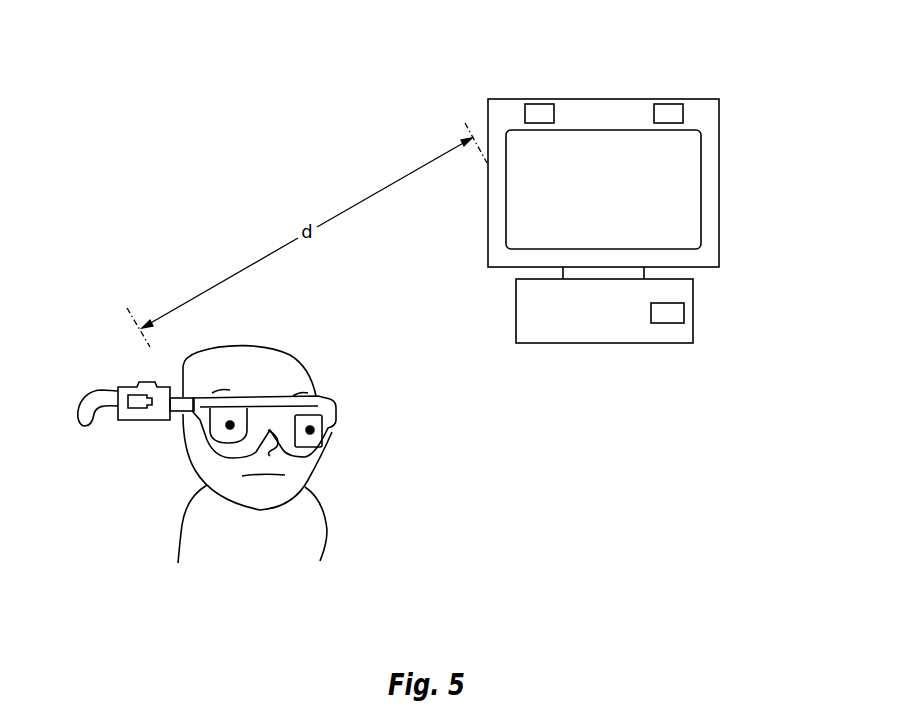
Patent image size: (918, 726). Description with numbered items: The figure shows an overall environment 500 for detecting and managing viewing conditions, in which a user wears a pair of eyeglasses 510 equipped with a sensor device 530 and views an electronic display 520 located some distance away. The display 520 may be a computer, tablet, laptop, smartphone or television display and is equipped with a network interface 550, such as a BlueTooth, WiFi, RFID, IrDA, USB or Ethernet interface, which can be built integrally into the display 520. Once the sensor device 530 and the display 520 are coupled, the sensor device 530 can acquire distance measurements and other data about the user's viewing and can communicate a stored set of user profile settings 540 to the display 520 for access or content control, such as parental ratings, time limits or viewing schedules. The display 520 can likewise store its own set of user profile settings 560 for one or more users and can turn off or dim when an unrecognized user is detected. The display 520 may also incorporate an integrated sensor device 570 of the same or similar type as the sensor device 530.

The overall environment 500 is at (540, 566).
The eyeglasses 510 is at (337, 423).
The electronic display 520 is at (719, 167).
The sensor device 530 is at (146, 420).
The user profile settings 540 is at (128, 387).
The network interface 550 is at (540, 104).
The set of user profile settings 560 is at (684, 312).
The integrated sensor device 570 is at (660, 104).